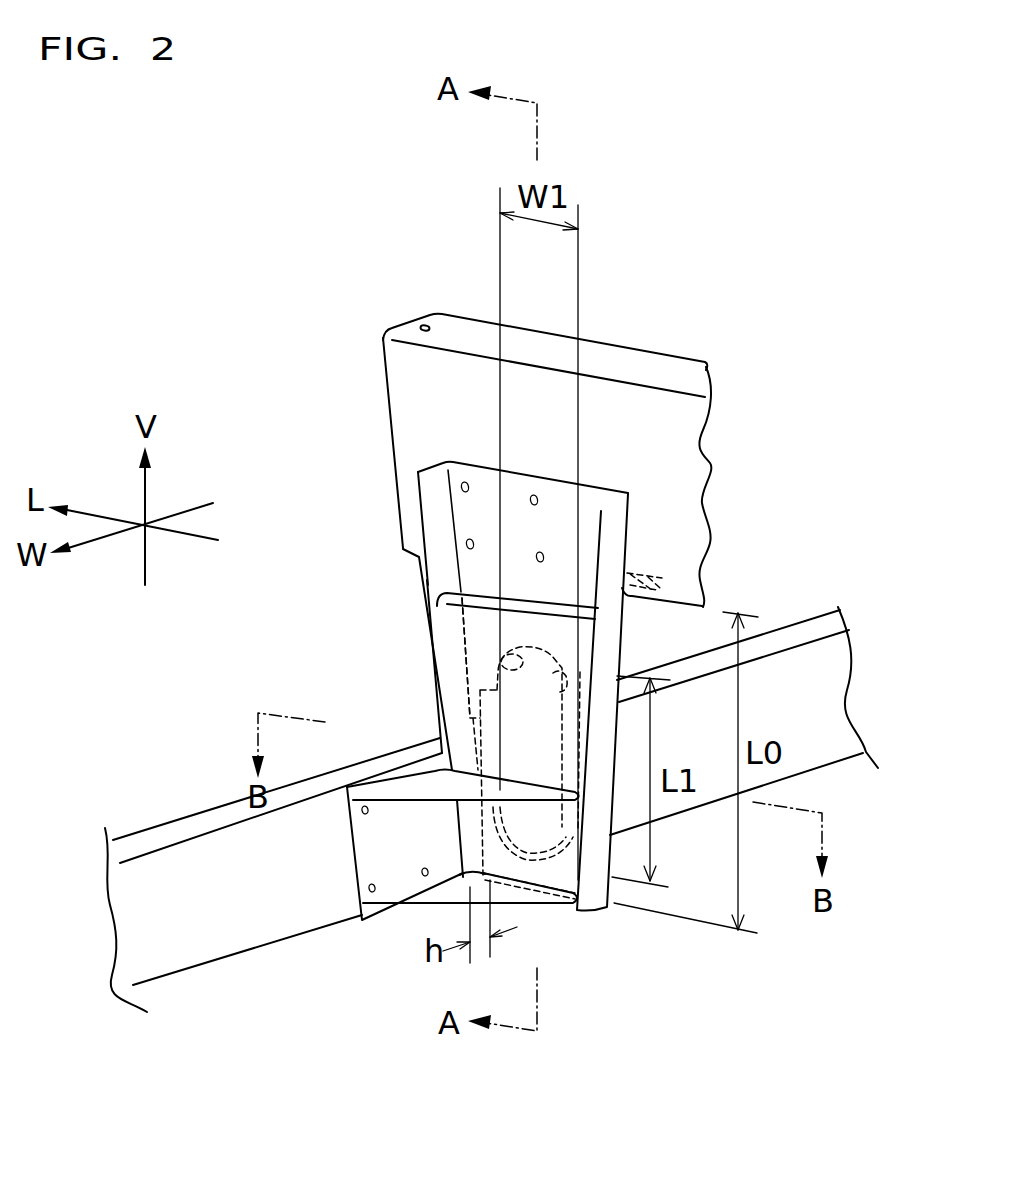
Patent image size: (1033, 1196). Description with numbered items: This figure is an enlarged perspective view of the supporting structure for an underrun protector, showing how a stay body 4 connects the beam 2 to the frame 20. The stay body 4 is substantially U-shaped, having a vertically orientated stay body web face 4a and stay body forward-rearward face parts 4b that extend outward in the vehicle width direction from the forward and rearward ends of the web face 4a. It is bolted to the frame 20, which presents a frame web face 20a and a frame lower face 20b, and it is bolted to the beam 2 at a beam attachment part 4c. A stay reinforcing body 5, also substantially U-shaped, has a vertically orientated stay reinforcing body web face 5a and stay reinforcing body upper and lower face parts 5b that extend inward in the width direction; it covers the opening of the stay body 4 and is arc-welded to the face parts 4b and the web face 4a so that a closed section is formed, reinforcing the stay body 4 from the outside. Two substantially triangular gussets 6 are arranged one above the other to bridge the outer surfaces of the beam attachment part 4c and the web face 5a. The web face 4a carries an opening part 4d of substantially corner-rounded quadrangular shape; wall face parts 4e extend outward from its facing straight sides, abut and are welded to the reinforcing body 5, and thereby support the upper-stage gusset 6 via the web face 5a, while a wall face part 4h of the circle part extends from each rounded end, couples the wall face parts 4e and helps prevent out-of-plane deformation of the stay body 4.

The beam 2 is at (178, 824).
The stay body 4 is at (461, 691).
The stay body web face 4a is at (420, 557).
The stay body forward-rearward face part 4b is at (613, 563).
The beam attachment part 4c is at (377, 840).
The opening part 4d is at (497, 670).
The wall face part 4e is at (433, 733).
The wall face part of circle part 4h is at (560, 667).
The stay reinforcing body 5 is at (420, 593).
The stay reinforcing body web face 5a is at (477, 644).
The stay reinforcing body upper and lower face part 5b is at (478, 585).
The gusset 6 is at (420, 905).
The frame 20 is at (563, 460).
The frame web face 20a is at (675, 458).
The frame lower face 20b is at (640, 589).